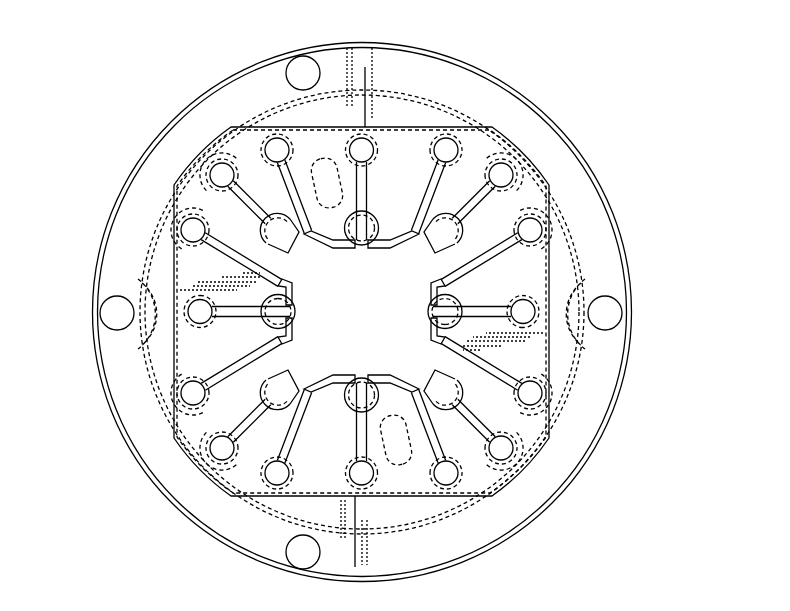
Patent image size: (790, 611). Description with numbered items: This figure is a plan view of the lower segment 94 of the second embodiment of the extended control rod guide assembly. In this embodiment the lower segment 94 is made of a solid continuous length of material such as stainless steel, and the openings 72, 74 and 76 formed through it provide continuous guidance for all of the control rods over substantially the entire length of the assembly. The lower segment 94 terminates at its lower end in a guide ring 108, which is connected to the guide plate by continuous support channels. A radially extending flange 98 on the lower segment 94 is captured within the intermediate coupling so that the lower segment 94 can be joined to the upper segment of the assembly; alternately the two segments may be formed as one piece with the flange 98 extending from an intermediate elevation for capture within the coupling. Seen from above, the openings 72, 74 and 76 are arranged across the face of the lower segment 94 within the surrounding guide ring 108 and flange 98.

The lower segment 94 is at (633, 257).
The flange 98 is at (537, 133).
The guide ring 108 is at (403, 147).
The opening 72 is at (550, 207).
The opening 74 is at (223, 260).
The opening 76 is at (378, 329).